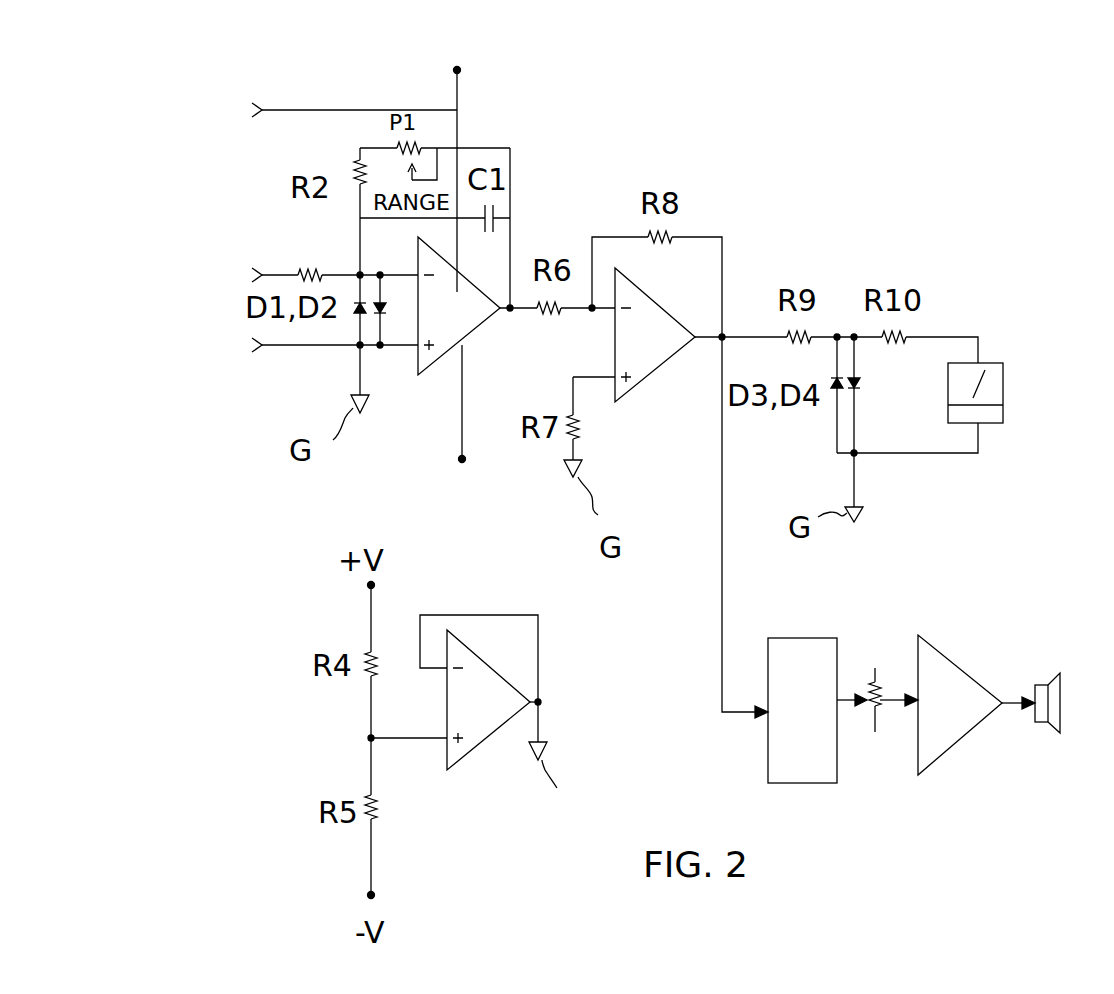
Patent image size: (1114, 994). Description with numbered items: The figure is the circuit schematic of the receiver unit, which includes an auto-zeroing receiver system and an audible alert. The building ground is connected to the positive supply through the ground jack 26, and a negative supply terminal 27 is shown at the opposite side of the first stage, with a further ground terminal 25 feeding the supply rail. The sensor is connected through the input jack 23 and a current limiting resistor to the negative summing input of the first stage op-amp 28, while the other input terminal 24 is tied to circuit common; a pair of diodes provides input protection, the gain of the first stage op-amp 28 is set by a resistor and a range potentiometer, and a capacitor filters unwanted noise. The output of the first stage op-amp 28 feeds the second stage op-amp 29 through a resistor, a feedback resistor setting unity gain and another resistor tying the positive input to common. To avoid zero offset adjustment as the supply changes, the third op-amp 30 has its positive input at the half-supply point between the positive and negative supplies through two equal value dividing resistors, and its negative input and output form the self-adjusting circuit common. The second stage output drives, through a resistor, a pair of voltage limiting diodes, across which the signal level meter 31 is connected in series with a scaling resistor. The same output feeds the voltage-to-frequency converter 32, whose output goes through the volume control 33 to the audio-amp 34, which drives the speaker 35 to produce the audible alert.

The input terminal 23 is at (193, 280).
The input terminal 24 is at (150, 343).
The ground terminal GND 25 is at (208, 128).
The ground jack 26 is at (467, 68).
The negative supply terminal -V 27 is at (452, 459).
The first stage op-amp 28 is at (425, 383).
The second stage op-amp 29 is at (622, 412).
The third op-amp 30 is at (465, 760).
The signal level meter 31 is at (997, 347).
The voltage-to-frequency converter 32 is at (812, 630).
The volume control 33 is at (875, 653).
The audio-amp 34 is at (940, 647).
The speaker 35 is at (1040, 678).